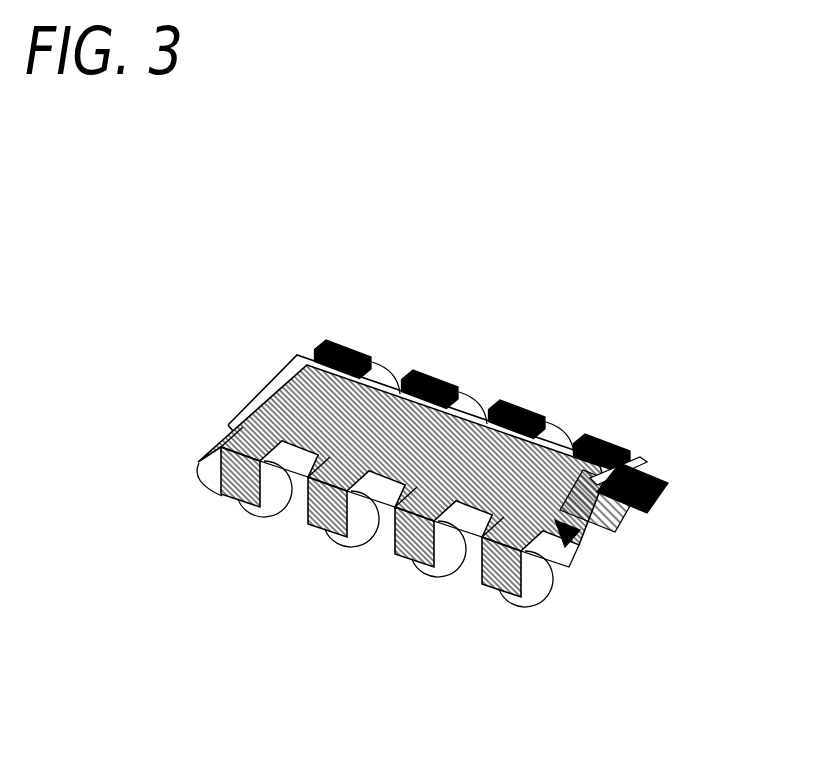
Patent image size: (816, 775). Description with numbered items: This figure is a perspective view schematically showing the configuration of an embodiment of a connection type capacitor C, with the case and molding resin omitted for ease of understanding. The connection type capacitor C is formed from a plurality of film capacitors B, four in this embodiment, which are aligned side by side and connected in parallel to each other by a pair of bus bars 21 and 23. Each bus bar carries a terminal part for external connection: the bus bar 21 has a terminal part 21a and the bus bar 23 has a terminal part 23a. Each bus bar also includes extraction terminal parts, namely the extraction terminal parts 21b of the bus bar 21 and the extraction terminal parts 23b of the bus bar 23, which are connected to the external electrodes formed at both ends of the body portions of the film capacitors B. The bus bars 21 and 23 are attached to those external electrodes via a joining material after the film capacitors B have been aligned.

The bus bar 21 is at (703, 594).
The terminal part 21a is at (623, 533).
The extraction terminal part 21b is at (521, 597).
The bus bar 23 is at (502, 285).
The terminal part 23a is at (650, 467).
The extraction terminal part 23b is at (592, 455).
The film capacitor B is at (265, 395).
The connection type capacitor C is at (658, 227).